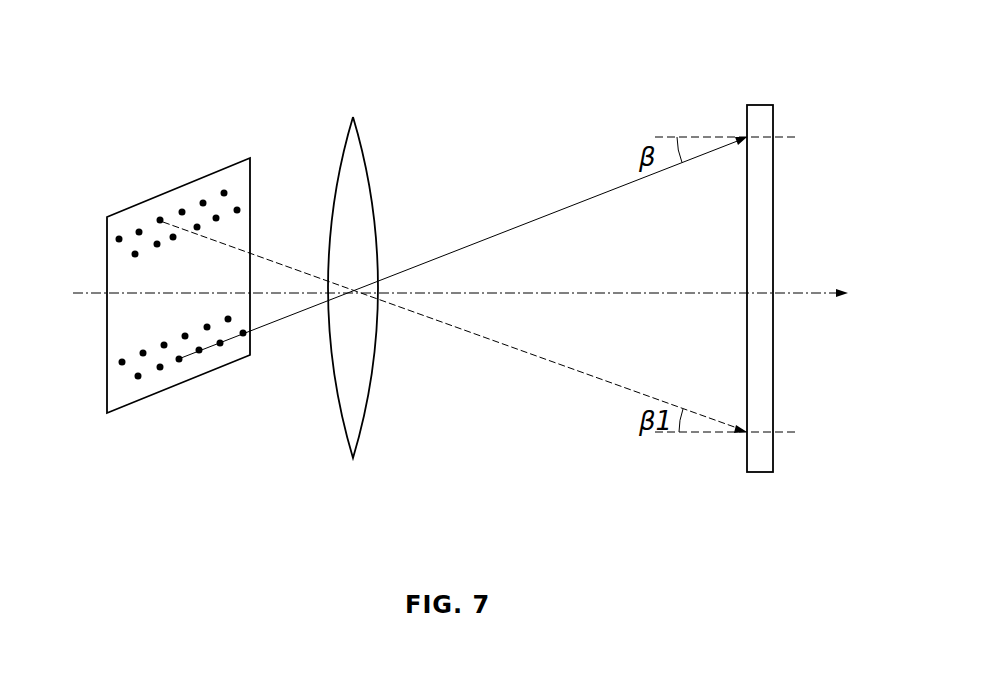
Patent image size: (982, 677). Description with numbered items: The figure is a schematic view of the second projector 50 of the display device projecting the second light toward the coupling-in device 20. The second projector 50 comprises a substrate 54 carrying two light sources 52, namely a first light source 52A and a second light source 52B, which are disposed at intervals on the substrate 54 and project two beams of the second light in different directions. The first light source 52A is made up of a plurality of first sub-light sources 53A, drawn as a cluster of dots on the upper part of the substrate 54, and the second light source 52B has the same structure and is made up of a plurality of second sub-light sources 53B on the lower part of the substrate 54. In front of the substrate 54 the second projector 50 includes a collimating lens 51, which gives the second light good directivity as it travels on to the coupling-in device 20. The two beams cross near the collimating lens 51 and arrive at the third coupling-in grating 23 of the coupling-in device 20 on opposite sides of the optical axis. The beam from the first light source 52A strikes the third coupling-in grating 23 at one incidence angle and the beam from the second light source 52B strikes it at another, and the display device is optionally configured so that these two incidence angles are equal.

The second projector 50 is at (293, 96).
The collimating lens 51 is at (363, 170).
The light sources 52 is at (134, 287).
The first light source 52A is at (131, 195).
The second light source 52B is at (137, 379).
The first sub-light sources 53A is at (117, 238).
The second sub-light sources 53B is at (120, 361).
The substrate 54 is at (118, 328).
The coupling-in device 20 is at (812, 288).
The third coupling-in grating 23 is at (757, 242).